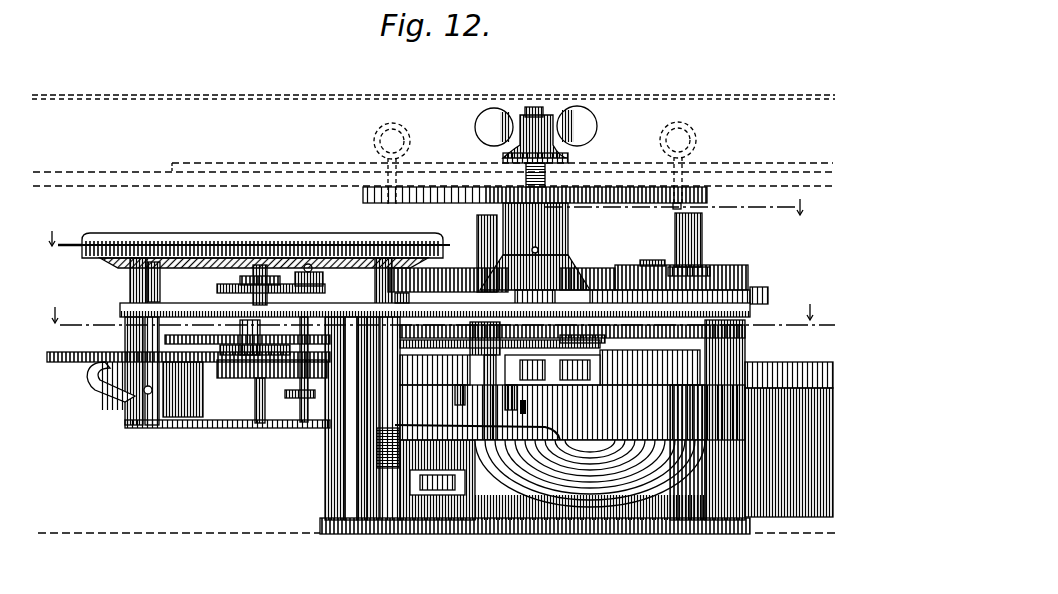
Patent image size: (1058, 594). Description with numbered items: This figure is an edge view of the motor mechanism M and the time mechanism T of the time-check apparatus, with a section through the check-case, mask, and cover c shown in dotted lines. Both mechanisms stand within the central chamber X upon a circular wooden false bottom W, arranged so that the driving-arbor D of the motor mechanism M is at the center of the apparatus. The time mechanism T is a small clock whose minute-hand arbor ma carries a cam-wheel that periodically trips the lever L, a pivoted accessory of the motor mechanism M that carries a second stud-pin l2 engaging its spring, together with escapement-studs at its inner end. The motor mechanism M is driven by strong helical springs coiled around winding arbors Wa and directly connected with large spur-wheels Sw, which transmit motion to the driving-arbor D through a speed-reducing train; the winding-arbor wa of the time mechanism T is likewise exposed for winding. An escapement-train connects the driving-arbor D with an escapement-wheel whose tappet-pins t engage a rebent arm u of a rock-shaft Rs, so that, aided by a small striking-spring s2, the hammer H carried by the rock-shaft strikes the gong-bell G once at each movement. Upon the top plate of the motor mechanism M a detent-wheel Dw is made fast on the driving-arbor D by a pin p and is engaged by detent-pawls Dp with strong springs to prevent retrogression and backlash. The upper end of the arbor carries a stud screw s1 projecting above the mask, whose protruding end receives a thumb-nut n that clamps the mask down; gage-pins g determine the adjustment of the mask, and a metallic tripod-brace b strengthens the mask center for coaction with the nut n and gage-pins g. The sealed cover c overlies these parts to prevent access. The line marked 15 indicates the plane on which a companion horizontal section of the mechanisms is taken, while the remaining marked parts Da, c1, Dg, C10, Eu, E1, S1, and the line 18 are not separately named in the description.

The cover c is at (433, 90).
The tripod-brace b is at (502, 161).
The dotted guide line c' c1 is at (433, 174).
The gage-pins g is at (534, 165).
The thumb-nut n is at (476, 125).
The stud screw s1 is at (542, 175).
The gear bar D^a Da is at (522, 196).
The section line 15 15 is at (425, 226).
The time mechanism T is at (266, 260).
The pin p is at (533, 249).
The minute-hand arbor ma is at (478, 208).
The winding arbors Wa is at (699, 244).
The motor mechanism M is at (761, 277).
The detent-pawls Dp is at (586, 280).
The block D^g Dg is at (681, 275).
The detent-wheel Dw is at (601, 268).
The section line 18 is at (433, 318).
The winding-arbor of time mechanism wa is at (148, 298).
The gear C^10 C10 is at (222, 297).
The lever L is at (310, 334).
The central chamber X is at (188, 399).
The rock-shaft Rs is at (393, 520).
The striking-spring s2 is at (395, 448).
The spur-wheels Sw is at (549, 373).
The part E^u Eu is at (572, 412).
The rebent arm u is at (455, 395).
The part E' E1 is at (519, 397).
The tappet-pins t is at (524, 411).
The hammer H is at (437, 480).
The gong-bell G is at (590, 473).
The housing S' S1 is at (791, 439).
The driving-arbor D is at (535, 535).
The wooden false bottom W is at (436, 557).
The stud-pin l2 is at (404, 295).